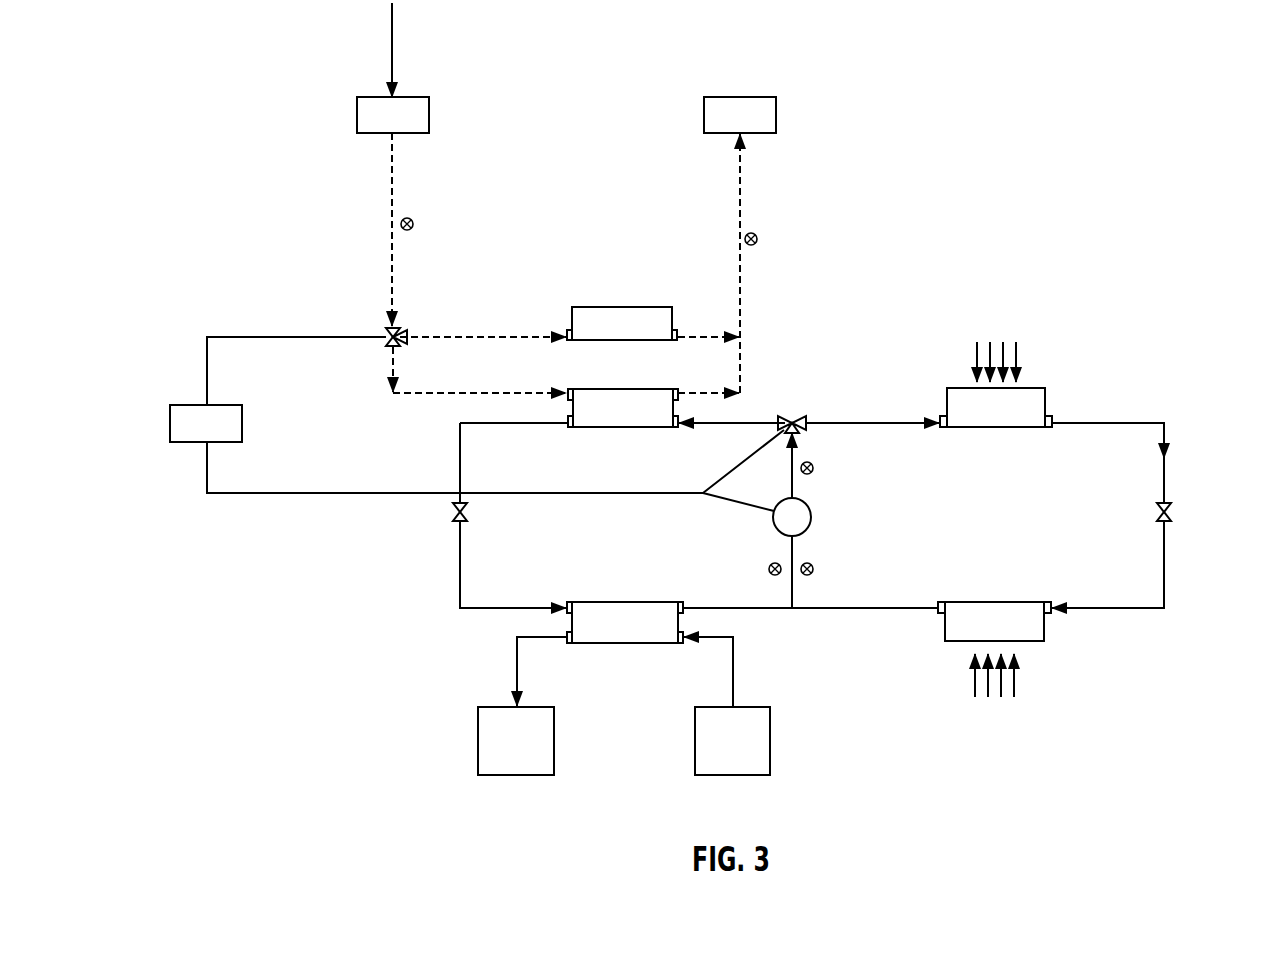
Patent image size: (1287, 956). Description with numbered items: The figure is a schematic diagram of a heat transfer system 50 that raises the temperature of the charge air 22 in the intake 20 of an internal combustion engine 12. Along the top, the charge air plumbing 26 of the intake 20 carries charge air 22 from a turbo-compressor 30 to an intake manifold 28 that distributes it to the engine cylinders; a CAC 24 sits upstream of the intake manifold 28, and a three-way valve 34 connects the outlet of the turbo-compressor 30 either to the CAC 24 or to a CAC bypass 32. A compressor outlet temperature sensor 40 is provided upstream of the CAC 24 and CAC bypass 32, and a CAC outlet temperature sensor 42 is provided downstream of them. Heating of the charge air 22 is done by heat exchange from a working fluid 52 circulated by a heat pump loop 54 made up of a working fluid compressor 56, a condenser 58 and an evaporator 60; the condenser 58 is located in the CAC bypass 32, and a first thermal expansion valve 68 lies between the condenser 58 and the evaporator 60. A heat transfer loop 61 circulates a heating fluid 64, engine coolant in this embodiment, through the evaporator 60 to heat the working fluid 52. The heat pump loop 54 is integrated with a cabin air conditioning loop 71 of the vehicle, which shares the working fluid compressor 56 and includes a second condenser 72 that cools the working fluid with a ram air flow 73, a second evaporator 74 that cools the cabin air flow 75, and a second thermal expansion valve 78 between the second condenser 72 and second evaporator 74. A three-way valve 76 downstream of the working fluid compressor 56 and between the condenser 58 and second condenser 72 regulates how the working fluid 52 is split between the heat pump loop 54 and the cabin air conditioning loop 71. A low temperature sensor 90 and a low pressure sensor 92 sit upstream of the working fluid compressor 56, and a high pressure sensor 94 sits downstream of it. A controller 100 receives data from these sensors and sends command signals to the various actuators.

The internal combustion engine 12 is at (555, 752).
The intake 20 is at (355, 208).
The charge air 22 is at (392, 28).
The CAC 24 is at (578, 311).
The charge air plumbing 26 is at (748, 279).
The intake manifold 28 is at (752, 128).
The turbo-compressor 30 is at (404, 128).
The CAC bypass 32 is at (441, 393).
The three-way valve 34 is at (386, 340).
The compressor outlet temperature sensor 40 is at (413, 222).
The CAC outlet temperature sensor 42 is at (757, 237).
The heat transfer system 50 is at (355, 460).
The working fluid 52 is at (745, 420).
The heat pump loop 54 is at (455, 577).
The working fluid compressor 56 is at (811, 515).
The condenser 58 is at (620, 430).
The evaporator 60 is at (604, 601).
The heat transfer loop 61 is at (458, 681).
The heating fluid 64 is at (733, 675).
The first thermal expansion valve 68 is at (453, 516).
The cabin air conditioning loop 71 is at (1168, 458).
The second condenser 72 is at (1040, 398).
The ram air flow 73 is at (1017, 350).
The second evaporator 74 is at (1000, 601).
The cabin air flow 75 is at (1015, 685).
The three-way valve 76 is at (798, 417).
The second thermal expansion valve 78 is at (1171, 519).
The low temperature sensor 90 is at (775, 576).
The low pressure sensor 92 is at (807, 576).
The high pressure sensor 94 is at (813, 466).
The controller 100 is at (224, 436).